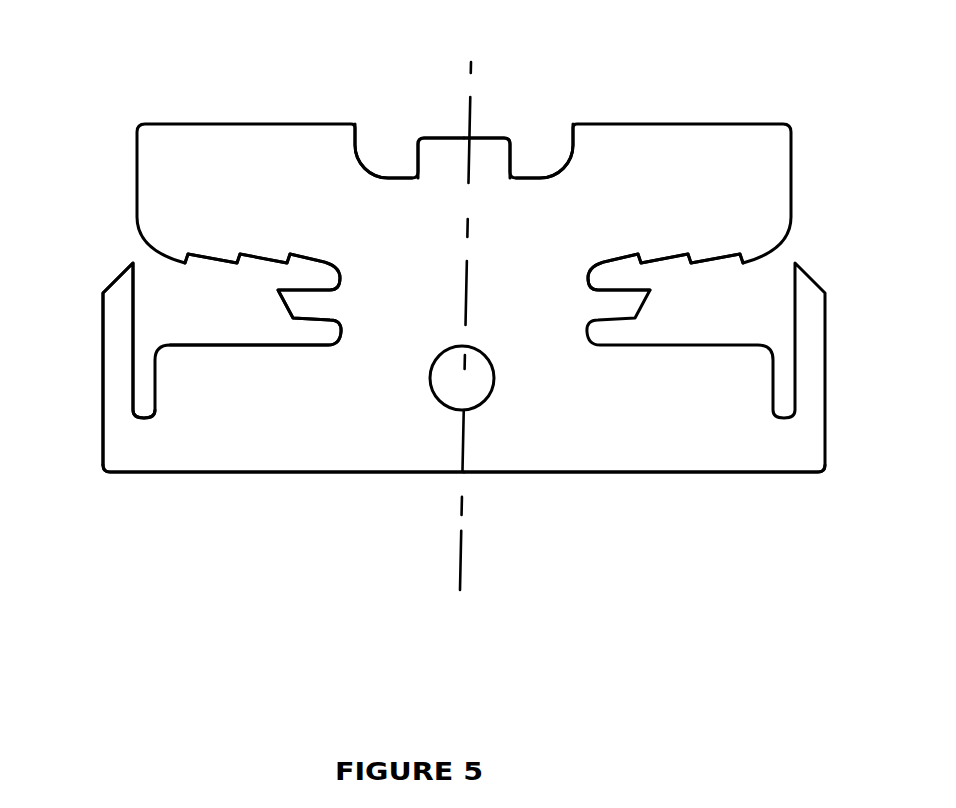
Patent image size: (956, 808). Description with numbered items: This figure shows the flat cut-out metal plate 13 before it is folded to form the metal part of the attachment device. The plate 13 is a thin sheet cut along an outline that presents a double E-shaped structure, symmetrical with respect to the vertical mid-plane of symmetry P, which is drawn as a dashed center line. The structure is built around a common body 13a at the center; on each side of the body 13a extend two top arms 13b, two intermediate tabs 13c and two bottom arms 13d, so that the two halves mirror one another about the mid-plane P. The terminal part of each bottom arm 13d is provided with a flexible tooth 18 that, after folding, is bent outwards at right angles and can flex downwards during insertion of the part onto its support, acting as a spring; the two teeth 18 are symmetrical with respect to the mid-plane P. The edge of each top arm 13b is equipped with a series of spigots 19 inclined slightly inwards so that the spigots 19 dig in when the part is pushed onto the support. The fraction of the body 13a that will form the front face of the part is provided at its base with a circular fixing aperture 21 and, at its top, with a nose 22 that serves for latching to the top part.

The metal plate 13 is at (728, 107).
The common body 13a is at (402, 242).
The top arm 13b is at (263, 155).
The intermediate tab 13c is at (297, 300).
The bottom arm 13d is at (258, 447).
The flexible tooth 18 is at (123, 378).
The spigots 19 is at (695, 270).
The circular fixing aperture 21 is at (467, 390).
The nose 22 is at (492, 155).
The mid-plane of symmetry P is at (472, 110).